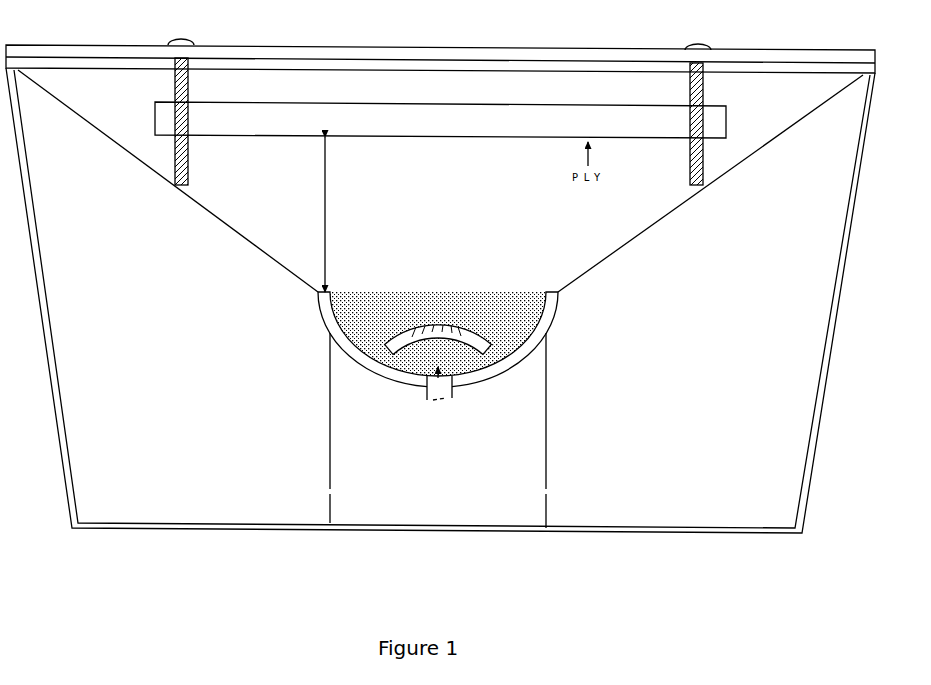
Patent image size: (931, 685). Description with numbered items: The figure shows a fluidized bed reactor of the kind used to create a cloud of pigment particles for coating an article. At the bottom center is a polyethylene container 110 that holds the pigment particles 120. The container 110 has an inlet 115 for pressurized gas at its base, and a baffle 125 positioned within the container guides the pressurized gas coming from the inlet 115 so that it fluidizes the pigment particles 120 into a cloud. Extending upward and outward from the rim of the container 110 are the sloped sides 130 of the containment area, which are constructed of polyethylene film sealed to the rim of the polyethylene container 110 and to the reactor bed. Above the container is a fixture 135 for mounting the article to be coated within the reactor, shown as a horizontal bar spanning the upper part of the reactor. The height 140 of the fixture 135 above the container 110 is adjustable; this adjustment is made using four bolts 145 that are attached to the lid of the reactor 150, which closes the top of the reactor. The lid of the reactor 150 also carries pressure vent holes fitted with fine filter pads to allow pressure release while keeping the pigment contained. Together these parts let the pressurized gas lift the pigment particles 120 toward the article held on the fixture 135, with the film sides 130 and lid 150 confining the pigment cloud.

The polyethylene container 110 is at (313, 329).
The inlet 115 is at (420, 396).
The pigment particles 120 is at (474, 312).
The baffle 125 is at (489, 352).
The sloped sides 130 is at (224, 229).
The fixture 135 is at (507, 101).
The height 140 is at (344, 214).
The bolts 145 is at (174, 91).
The lid of the reactor 150 is at (196, 42).